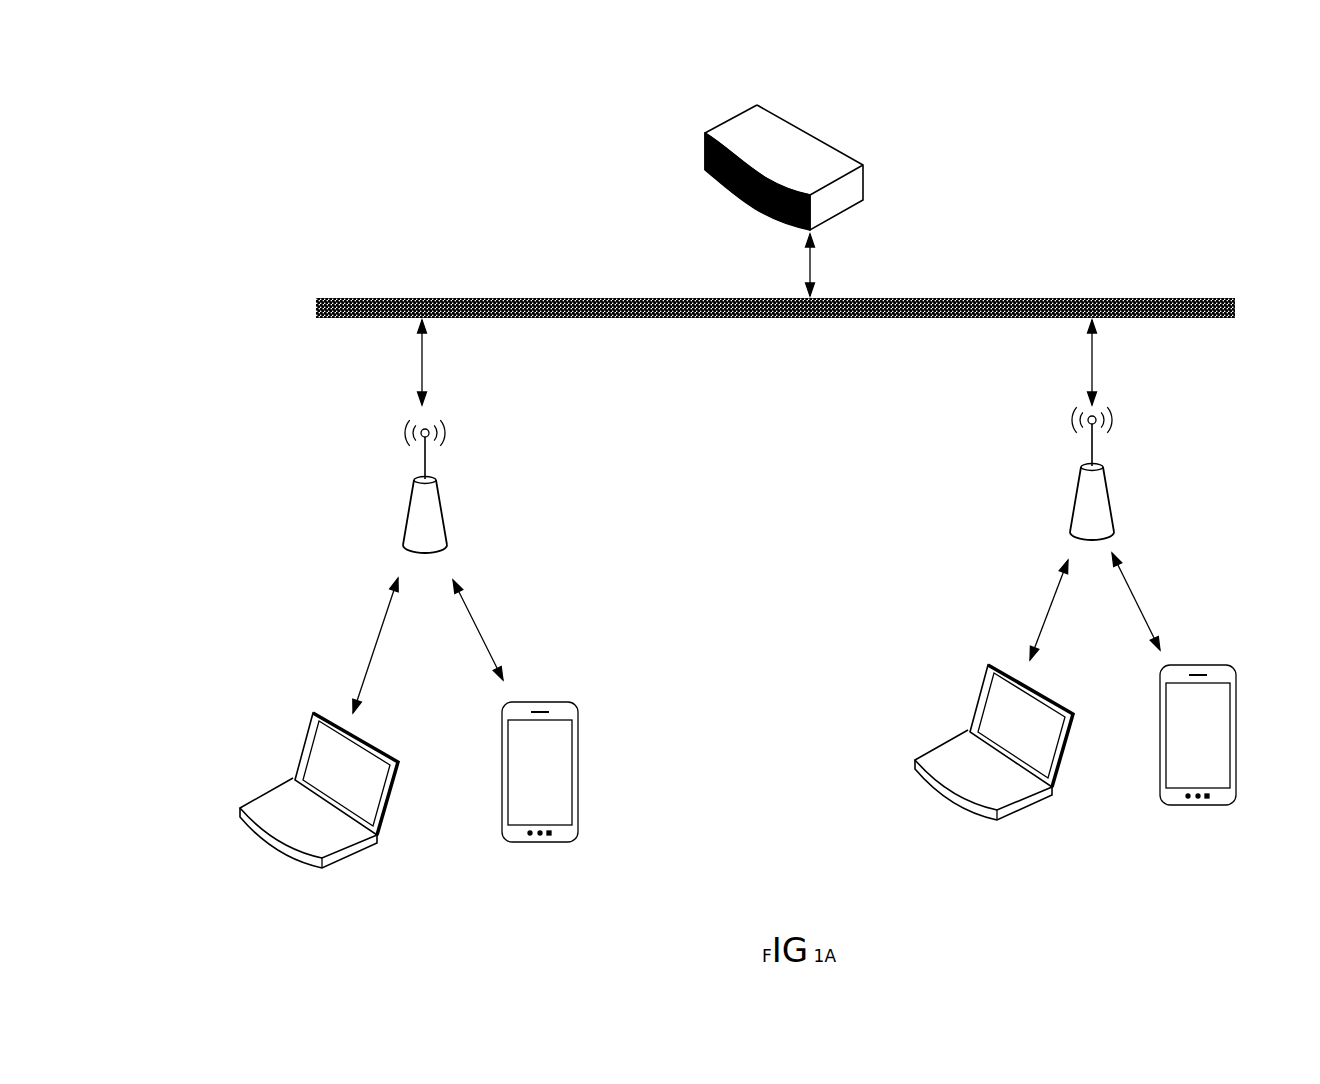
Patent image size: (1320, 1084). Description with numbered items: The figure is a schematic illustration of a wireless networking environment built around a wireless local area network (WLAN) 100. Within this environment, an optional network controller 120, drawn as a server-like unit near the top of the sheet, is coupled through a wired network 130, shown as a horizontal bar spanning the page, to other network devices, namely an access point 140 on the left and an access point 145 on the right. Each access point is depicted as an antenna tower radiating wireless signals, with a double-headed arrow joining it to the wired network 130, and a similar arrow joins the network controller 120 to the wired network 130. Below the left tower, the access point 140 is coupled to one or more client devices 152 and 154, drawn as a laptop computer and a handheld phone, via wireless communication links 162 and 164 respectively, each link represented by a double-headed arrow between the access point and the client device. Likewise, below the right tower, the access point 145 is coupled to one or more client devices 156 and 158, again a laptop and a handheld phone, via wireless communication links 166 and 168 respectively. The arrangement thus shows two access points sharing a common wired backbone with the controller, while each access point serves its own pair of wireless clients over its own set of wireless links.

The wireless local area network (WLAN) 100 is at (234, 60).
The network controller 120 is at (705, 133).
The wired network 130 is at (545, 298).
The access point 140 is at (412, 508).
The access point 145 is at (1078, 500).
The client device 152 is at (240, 812).
The client device 154 is at (540, 843).
The client device 156 is at (915, 764).
The client device 158 is at (1198, 808).
The wireless communication link 162 is at (369, 636).
The wireless communication link 164 is at (519, 636).
The wireless communication link 166 is at (1011, 610).
The wireless communication link 168 is at (1174, 592).